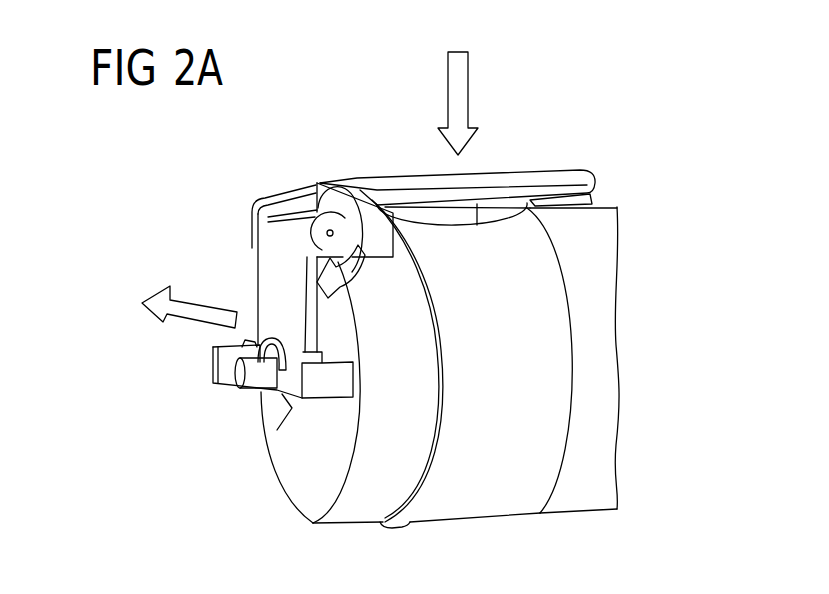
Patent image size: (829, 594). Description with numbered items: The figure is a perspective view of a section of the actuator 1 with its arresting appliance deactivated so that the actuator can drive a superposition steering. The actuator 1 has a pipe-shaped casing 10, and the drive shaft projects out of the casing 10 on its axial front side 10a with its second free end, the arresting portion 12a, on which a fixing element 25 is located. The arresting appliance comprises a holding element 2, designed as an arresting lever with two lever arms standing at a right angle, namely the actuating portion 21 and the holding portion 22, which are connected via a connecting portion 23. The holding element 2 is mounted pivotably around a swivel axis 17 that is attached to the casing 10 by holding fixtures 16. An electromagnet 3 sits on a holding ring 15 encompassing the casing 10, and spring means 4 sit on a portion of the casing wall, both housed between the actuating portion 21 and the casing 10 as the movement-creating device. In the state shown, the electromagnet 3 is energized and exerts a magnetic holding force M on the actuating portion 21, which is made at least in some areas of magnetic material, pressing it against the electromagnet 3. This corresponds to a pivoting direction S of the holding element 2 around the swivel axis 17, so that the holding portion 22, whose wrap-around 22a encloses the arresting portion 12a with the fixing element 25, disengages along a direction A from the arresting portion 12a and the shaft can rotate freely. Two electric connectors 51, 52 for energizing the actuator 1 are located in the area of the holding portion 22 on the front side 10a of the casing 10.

The actuator 1 is at (471, 385).
The holding element 2 is at (317, 183).
The electromagnet 3 is at (443, 210).
The spring means 4 is at (553, 203).
The casing 10 is at (612, 388).
The axial front side 10a is at (298, 495).
The arresting portion 12a is at (253, 380).
The holding ring 15 is at (512, 498).
The holding fixtures 16 is at (264, 201).
The swivel axis 17 is at (327, 233).
The actuating portion 21 is at (540, 168).
The holding portion 22 is at (272, 283).
The wrap-around 22a is at (292, 404).
The connecting portion 23 is at (305, 203).
The fixing element 25 is at (238, 381).
The electric connector 51 is at (215, 352).
The electric connector 52 is at (322, 393).
The magnetic holding force M is at (458, 90).
The disengagement direction A is at (195, 317).
The pivoting direction S is at (342, 273).